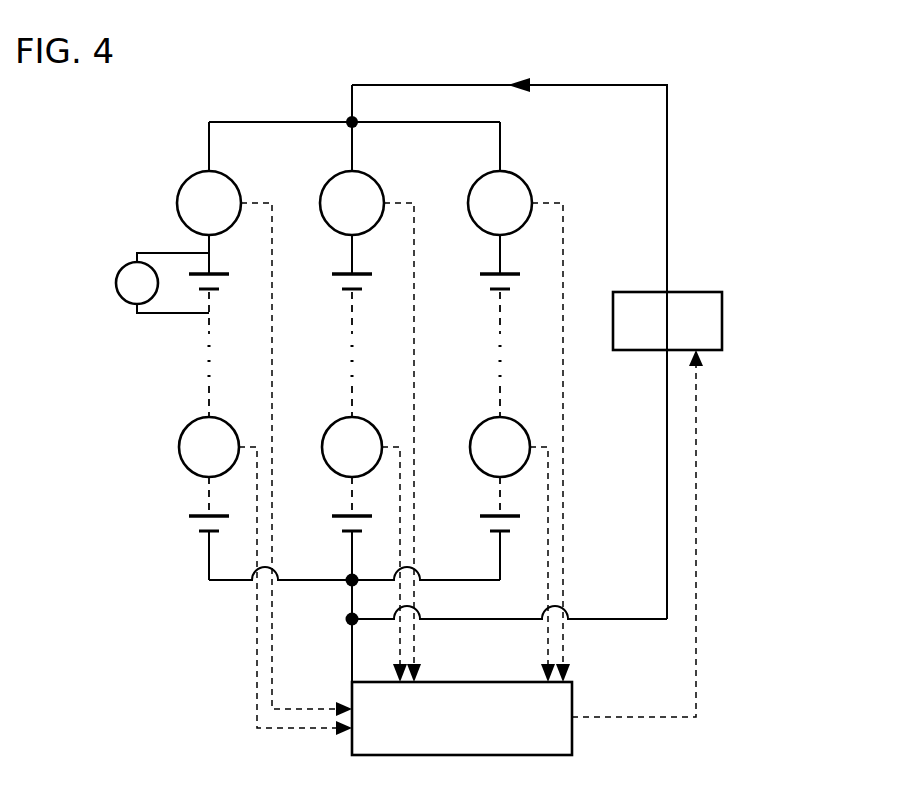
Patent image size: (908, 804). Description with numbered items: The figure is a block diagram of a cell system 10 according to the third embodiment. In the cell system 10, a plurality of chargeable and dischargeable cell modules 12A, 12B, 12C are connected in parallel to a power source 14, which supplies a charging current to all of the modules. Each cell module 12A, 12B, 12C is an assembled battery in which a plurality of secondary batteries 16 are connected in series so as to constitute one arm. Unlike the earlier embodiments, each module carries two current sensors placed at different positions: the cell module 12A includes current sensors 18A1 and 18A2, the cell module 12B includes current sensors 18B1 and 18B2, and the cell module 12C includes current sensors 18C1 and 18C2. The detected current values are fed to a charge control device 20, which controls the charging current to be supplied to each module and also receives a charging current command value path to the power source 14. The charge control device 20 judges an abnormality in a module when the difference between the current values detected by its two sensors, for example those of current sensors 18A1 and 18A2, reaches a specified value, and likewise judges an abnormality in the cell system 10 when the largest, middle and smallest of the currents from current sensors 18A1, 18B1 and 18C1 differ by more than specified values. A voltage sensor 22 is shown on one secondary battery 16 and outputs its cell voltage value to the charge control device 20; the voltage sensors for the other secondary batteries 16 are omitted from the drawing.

The cell system 10 is at (280, 80).
The cell module 12A is at (175, 420).
The cell module 12B is at (320, 405).
The cell module 12C is at (466, 405).
The power source 14 is at (700, 292).
The secondary battery 16 is at (170, 529).
The current sensor 18A1 is at (232, 179).
The current sensor 18A2 is at (226, 418).
The current sensor 18B1 is at (374, 179).
The current sensor 18B2 is at (369, 418).
The current sensor 18C1 is at (522, 179).
The current sensor 18C2 is at (517, 418).
The charge control device 20 is at (572, 740).
The voltage sensor 22 is at (117, 283).